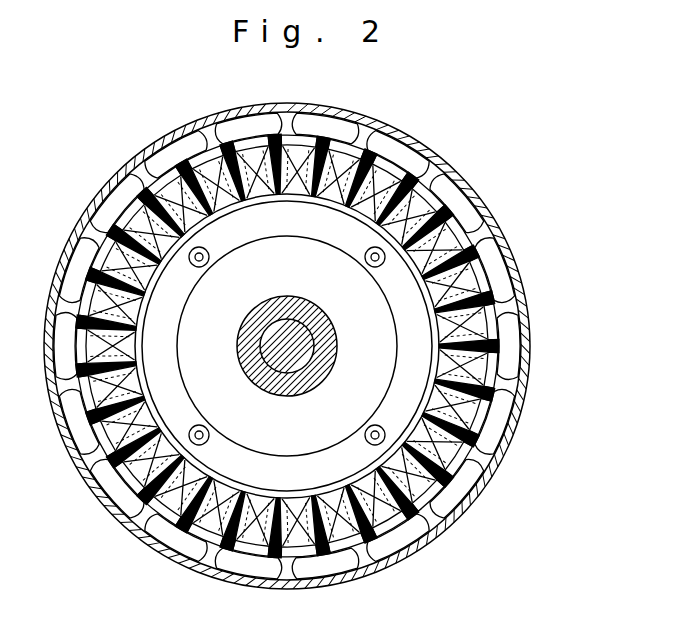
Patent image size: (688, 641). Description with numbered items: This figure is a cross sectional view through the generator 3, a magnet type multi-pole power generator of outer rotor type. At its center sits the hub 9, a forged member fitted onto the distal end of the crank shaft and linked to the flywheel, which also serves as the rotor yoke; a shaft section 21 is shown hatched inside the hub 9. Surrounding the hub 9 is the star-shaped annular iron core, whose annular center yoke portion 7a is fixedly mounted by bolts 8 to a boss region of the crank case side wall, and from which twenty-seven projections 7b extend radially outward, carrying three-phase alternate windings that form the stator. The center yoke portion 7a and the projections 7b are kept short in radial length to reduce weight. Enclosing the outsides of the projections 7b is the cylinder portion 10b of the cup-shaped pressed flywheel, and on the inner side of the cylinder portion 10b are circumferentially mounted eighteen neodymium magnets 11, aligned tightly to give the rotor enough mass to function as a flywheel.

The generator 3 is at (150, 124).
The center yoke portion 7a is at (172, 379).
The projections 7b is at (120, 213).
The bolts 8 is at (205, 267).
The hub 9 is at (323, 372).
The cylinder portion 10b is at (463, 180).
The neodymium magnets 11 is at (117, 494).
The axle shaft 21 is at (293, 330).